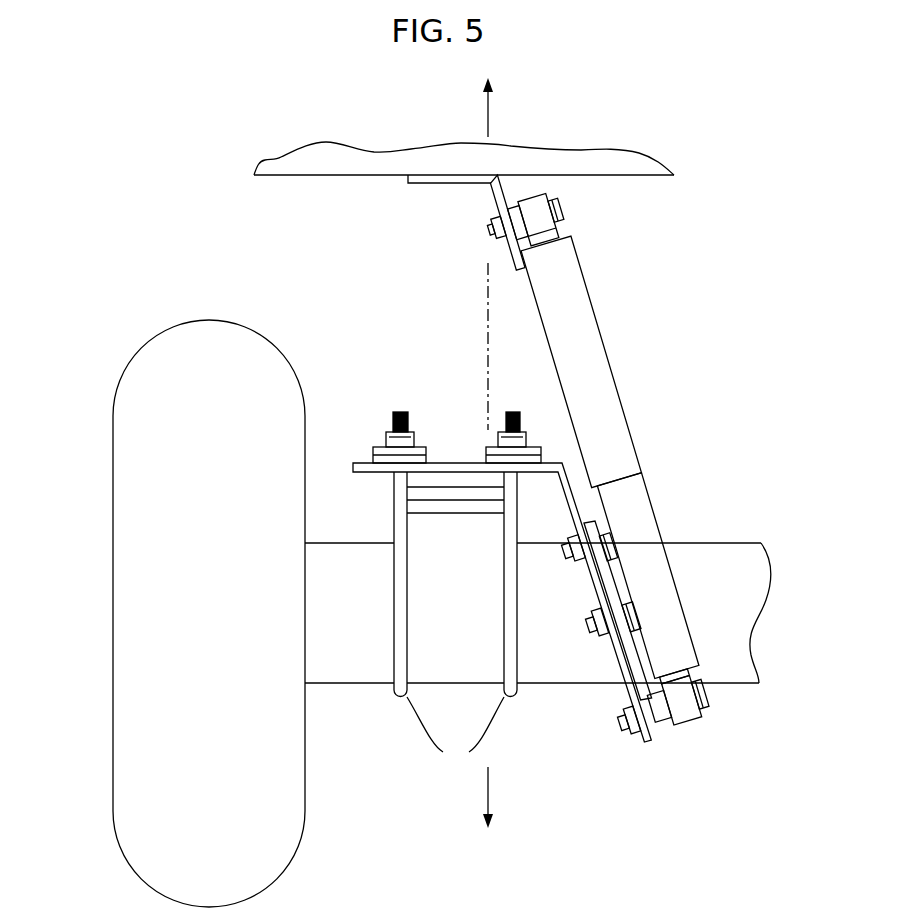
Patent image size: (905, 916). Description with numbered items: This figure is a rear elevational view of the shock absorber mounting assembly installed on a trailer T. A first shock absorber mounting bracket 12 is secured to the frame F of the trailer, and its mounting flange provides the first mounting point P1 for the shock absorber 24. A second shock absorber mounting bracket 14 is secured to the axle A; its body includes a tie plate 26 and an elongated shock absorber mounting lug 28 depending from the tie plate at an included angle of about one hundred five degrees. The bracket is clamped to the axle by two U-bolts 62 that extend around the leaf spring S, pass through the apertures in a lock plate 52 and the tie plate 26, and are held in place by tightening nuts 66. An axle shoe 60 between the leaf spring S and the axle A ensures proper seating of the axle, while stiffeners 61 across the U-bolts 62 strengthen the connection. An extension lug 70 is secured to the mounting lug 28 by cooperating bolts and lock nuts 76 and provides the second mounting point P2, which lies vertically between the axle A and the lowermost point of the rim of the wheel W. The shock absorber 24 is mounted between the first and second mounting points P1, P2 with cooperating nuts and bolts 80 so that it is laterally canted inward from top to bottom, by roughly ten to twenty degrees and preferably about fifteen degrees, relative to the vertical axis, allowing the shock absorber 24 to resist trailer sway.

The first shock absorber mounting bracket 12 is at (400, 197).
The second shock absorber mounting bracket 14 is at (479, 544).
The shock absorber 24 is at (598, 368).
The tie plate 26 is at (360, 474).
The elongated shock absorber mounting lug 28 is at (580, 512).
The lock plate 52 is at (553, 450).
The axle shoe 60 is at (440, 535).
The stiffeners 61 is at (372, 447).
The U-bolts 62 is at (455, 732).
The tightening nuts 66 is at (415, 436).
The extension lug 70 is at (616, 592).
The bolts and lock nuts 76 is at (605, 546).
The nuts and bolts 80 is at (560, 214).
The frame F is at (448, 158).
The trailer T is at (490, 110).
The wheel W is at (157, 372).
The axle A is at (357, 640).
The leaf spring S is at (458, 492).
The first mounting point P1 is at (548, 228).
The second mounting point P2 is at (694, 718).